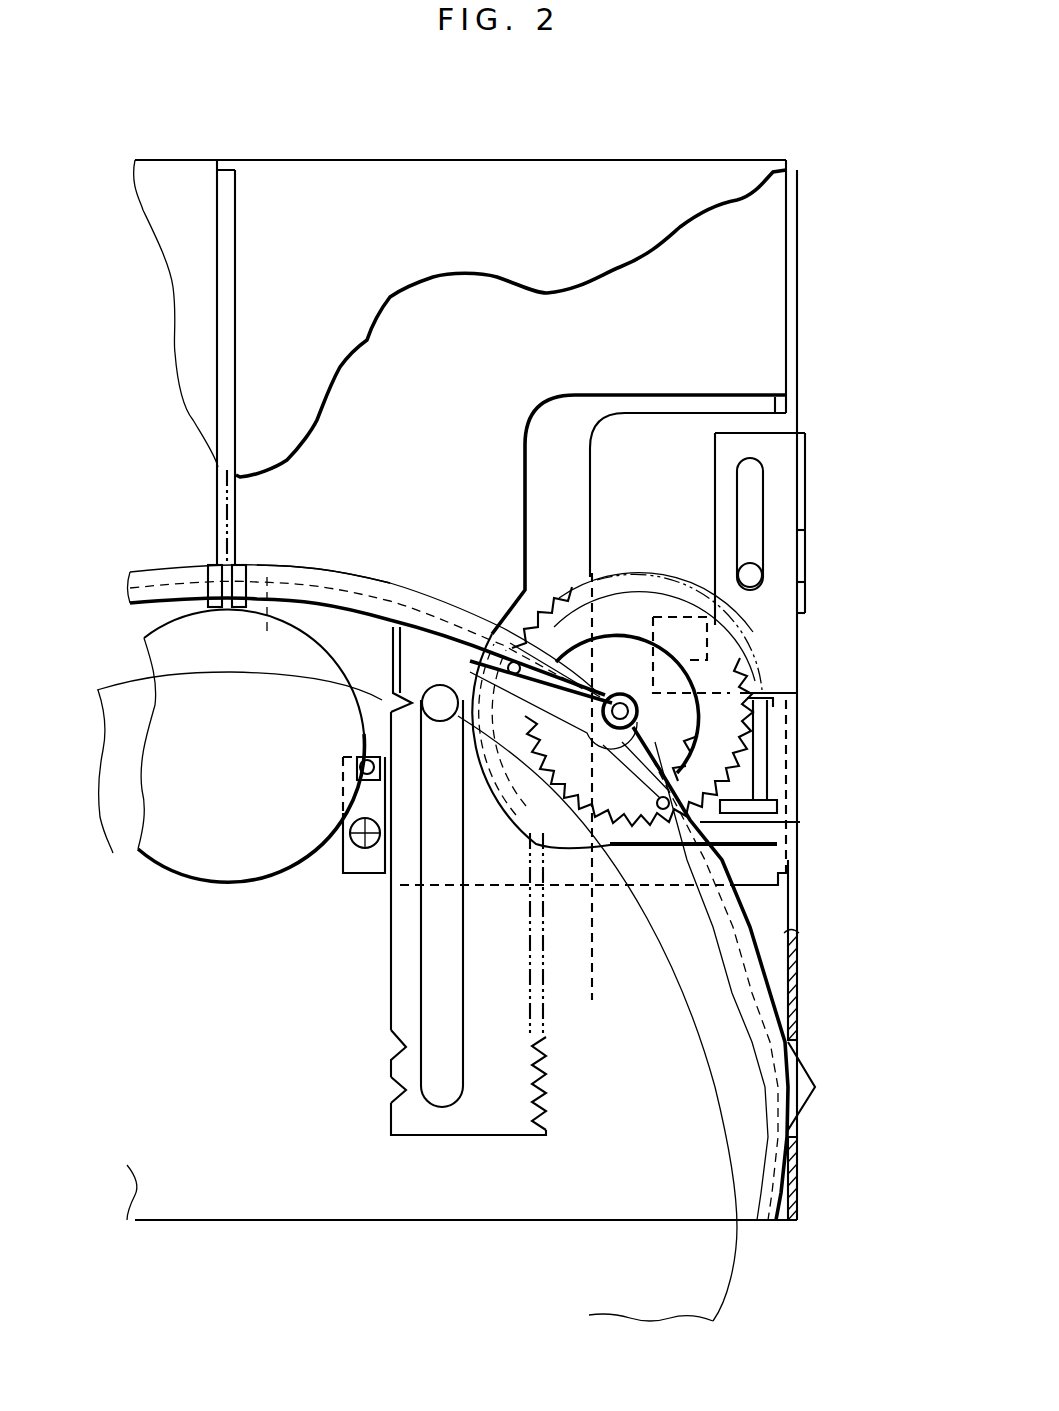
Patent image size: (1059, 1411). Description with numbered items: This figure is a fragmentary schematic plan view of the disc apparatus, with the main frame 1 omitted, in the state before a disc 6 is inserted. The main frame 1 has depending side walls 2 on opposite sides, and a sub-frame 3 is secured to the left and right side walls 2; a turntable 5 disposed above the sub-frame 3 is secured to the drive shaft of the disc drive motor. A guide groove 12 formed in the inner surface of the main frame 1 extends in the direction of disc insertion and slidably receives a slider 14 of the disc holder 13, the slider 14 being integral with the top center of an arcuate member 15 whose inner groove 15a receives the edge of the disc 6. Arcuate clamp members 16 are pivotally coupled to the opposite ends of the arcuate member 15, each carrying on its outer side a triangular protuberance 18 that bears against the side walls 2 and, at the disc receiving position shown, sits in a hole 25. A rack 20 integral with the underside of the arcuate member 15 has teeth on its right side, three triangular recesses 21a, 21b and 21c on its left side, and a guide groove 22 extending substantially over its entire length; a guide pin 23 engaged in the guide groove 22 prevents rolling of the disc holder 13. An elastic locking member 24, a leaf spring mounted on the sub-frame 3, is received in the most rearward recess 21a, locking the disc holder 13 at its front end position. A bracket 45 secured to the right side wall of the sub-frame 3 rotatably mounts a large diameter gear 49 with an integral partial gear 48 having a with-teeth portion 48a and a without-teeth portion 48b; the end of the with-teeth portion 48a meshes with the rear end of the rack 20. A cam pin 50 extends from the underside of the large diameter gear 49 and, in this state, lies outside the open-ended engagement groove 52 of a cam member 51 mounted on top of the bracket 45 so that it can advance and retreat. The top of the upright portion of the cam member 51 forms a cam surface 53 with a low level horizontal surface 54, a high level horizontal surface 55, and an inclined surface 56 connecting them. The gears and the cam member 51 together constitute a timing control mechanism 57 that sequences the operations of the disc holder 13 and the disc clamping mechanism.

The main frame 1 is at (437, 158).
The side walls 2 is at (800, 981).
The sub-frame 3 is at (767, 281).
The turntable 5 is at (148, 862).
The disc 6 is at (734, 1266).
The guide groove 12 is at (230, 232).
The disc holder 13 is at (168, 554).
The slider 14 is at (222, 573).
The arcuate member 15 is at (330, 567).
The groove 15a is at (275, 624).
The clamp members 16 is at (752, 957).
The triangular protuberance 18 is at (808, 1068).
The rack 20 is at (496, 1152).
The triangular recess 21a is at (393, 627).
The triangular recess 21b is at (391, 1048).
The triangular recess 21c is at (391, 1095).
The guide groove 22 is at (438, 1098).
The guide pin 23 is at (447, 693).
The elastic locking member 24 is at (385, 729).
The hole 25 is at (800, 1044).
The bracket 45 is at (800, 766).
The partial gear 48 is at (633, 618).
The with-teeth portion 48a is at (580, 813).
The without-teeth portion 48b is at (577, 643).
The large diameter gear 49 is at (757, 675).
The cam pin 50 is at (614, 847).
The cam member 51 is at (814, 664).
The engagement groove 52 is at (690, 615).
The cam surface 53 is at (818, 450).
The low level horizontal surface 54 is at (805, 501).
The high level horizontal surface 55 is at (805, 601).
The inclined surface 56 is at (805, 558).
The timing control mechanism 57 is at (675, 461).